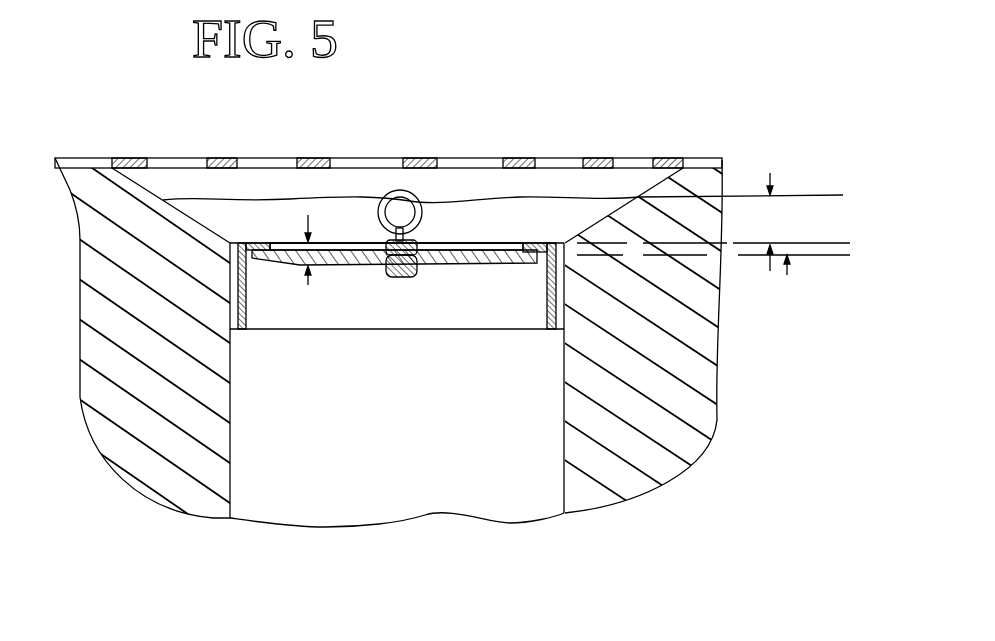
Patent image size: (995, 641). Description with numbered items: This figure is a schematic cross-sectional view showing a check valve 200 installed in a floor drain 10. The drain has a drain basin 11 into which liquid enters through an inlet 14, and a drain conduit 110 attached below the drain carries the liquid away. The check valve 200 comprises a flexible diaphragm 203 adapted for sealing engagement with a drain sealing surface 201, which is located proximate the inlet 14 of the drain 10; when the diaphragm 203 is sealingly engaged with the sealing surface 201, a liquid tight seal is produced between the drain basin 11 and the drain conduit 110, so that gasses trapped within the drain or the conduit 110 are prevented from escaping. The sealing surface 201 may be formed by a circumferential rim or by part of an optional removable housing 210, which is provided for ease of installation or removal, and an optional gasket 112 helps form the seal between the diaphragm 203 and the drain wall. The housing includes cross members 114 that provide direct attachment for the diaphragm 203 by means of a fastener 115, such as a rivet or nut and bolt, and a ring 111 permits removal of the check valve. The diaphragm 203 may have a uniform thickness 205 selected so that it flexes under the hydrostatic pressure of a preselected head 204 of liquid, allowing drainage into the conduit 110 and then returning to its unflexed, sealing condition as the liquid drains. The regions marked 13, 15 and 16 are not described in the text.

The floor drain 10 is at (640, 152).
The drain basin 11 is at (150, 190).
The pavement slab 13 is at (317, 160).
The inlet 14 is at (242, 207).
The manhole interior 15 is at (408, 446).
The space at right side 16 is at (553, 207).
The drain conduit 110 is at (232, 500).
The ring 111 is at (410, 191).
The gasket 112 is at (236, 272).
The cross members 114 is at (345, 243).
The fastener 115 is at (390, 275).
The check valve 200 is at (469, 194).
The drain sealing surface 201 is at (250, 251).
The diaphragm 203 is at (503, 265).
The head 204 is at (770, 271).
The thickness 205 is at (308, 285).
The housing 210 is at (243, 315).